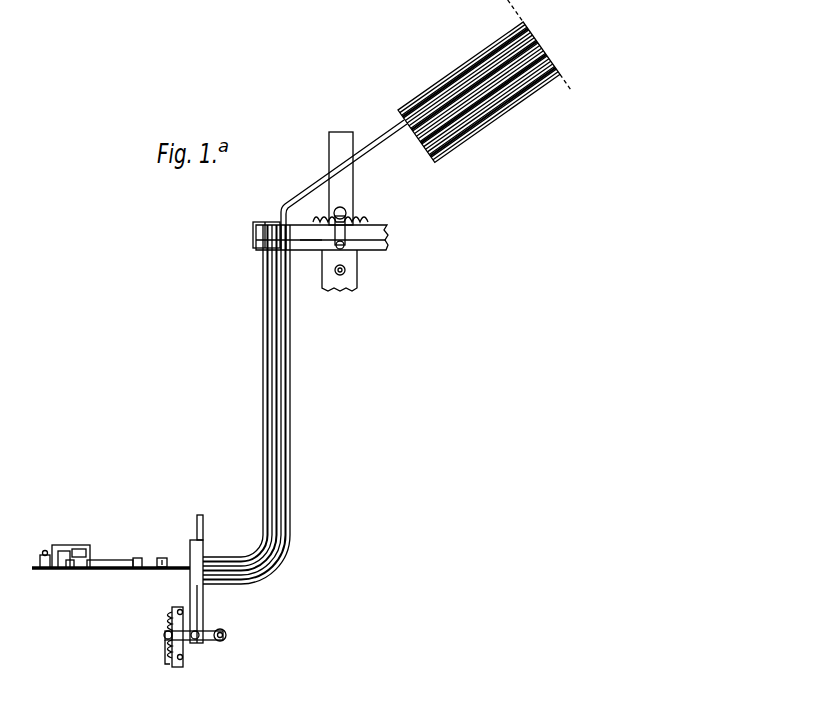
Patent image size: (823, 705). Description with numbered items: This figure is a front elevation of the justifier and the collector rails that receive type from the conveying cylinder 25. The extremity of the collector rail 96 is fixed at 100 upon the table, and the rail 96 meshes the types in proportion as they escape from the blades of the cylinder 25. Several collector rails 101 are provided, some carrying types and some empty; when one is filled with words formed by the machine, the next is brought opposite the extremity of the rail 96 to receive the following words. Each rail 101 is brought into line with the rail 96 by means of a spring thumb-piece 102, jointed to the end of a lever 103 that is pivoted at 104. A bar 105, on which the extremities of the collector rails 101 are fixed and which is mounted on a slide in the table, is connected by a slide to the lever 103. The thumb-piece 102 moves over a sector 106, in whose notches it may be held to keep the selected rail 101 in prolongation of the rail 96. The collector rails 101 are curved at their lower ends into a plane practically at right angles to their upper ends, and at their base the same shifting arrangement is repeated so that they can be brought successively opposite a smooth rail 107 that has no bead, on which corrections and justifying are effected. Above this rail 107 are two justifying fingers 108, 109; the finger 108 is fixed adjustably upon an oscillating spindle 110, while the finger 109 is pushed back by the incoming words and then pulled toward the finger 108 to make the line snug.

The conveying cylinder 25 is at (462, 140).
The collector rail 96 is at (316, 193).
The fixing point of the collector rail 100 is at (255, 228).
The collector rails 101 is at (258, 362).
The spring thumb-piece 102 is at (350, 208).
The lever 103 is at (357, 250).
The pivot 104 is at (347, 272).
The bar 105 is at (307, 247).
The sector 106 is at (388, 226).
The smooth rail 107 is at (150, 572).
The finger 108 is at (70, 572).
The finger 109 is at (45, 572).
The oscillating spindle 110 is at (110, 562).